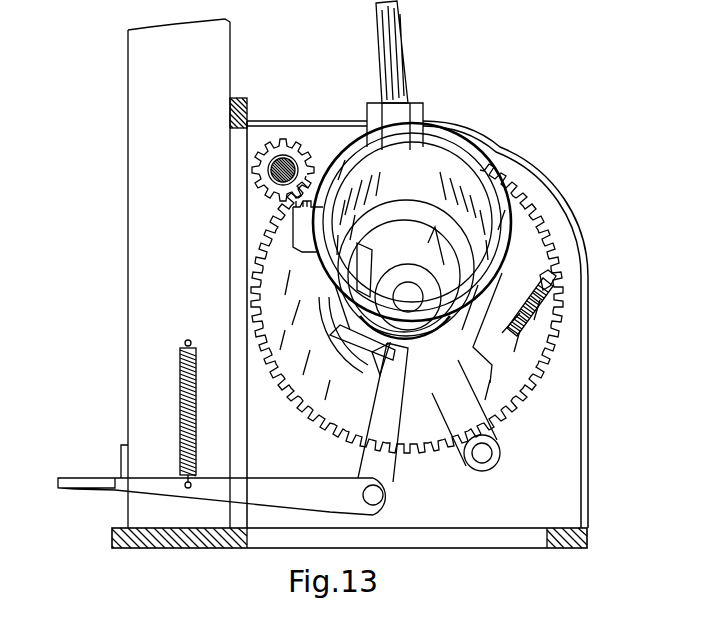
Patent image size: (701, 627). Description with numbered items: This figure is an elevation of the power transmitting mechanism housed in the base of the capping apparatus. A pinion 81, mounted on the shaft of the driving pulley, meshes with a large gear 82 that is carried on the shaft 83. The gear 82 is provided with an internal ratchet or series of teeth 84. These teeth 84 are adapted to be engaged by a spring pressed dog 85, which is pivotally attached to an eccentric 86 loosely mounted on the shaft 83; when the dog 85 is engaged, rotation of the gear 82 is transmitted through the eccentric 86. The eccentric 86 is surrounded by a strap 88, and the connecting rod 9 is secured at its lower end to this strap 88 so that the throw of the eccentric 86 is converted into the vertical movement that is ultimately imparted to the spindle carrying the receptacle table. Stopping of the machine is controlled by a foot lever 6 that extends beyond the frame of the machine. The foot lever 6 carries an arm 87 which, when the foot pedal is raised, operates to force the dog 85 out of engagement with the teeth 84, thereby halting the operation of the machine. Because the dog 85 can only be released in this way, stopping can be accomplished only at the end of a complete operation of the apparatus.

The foot lever 6 is at (160, 483).
The connecting rod 9 is at (393, 58).
The pinion 81 is at (300, 160).
The gear 82 is at (318, 238).
The shaft 83 is at (408, 297).
The internal ratchet teeth 84 is at (427, 227).
The spring pressed dog 85 is at (385, 345).
The eccentric 86 is at (470, 188).
The arm 87 is at (383, 412).
The strap 88 is at (447, 147).